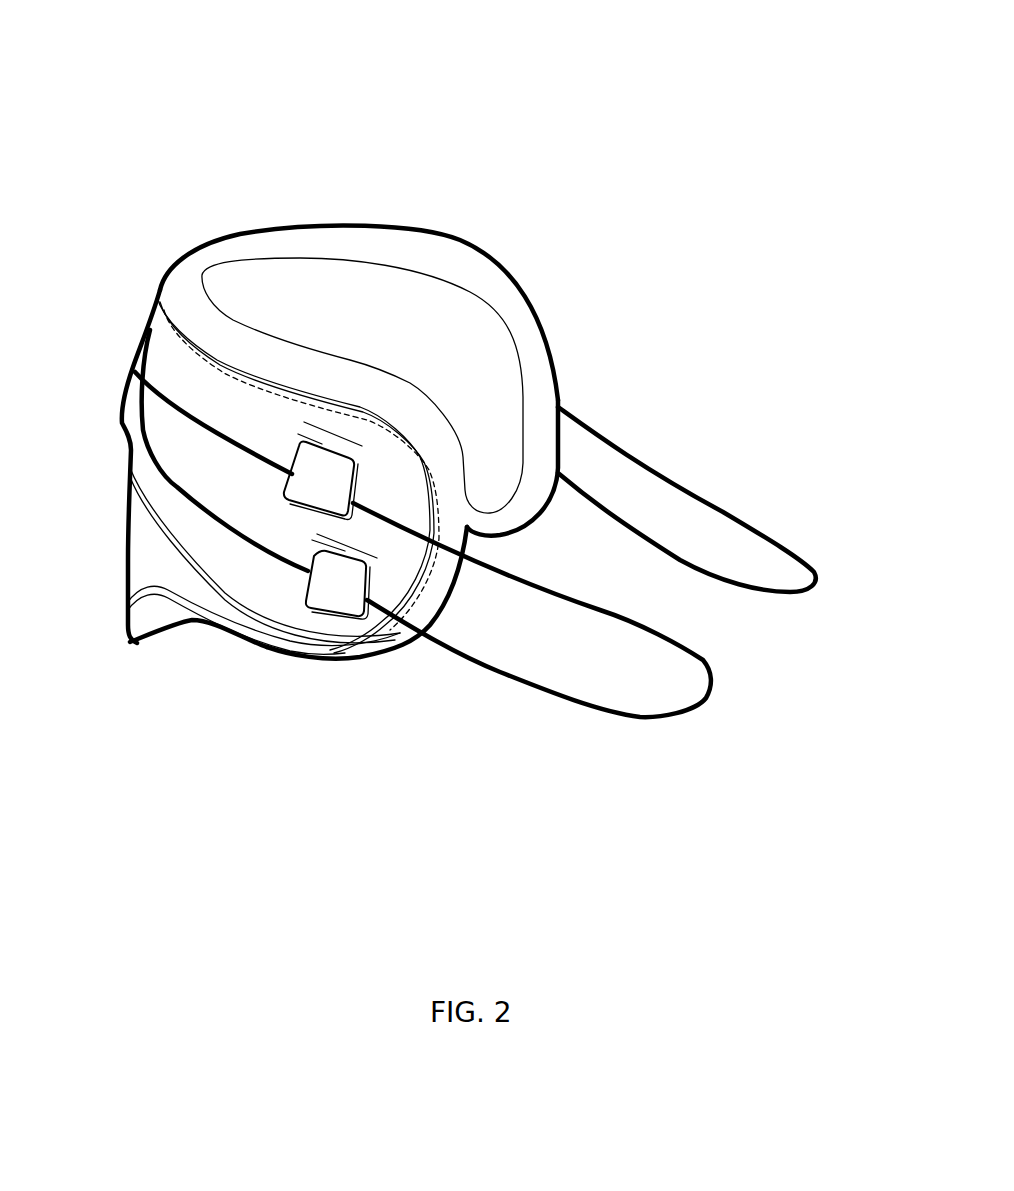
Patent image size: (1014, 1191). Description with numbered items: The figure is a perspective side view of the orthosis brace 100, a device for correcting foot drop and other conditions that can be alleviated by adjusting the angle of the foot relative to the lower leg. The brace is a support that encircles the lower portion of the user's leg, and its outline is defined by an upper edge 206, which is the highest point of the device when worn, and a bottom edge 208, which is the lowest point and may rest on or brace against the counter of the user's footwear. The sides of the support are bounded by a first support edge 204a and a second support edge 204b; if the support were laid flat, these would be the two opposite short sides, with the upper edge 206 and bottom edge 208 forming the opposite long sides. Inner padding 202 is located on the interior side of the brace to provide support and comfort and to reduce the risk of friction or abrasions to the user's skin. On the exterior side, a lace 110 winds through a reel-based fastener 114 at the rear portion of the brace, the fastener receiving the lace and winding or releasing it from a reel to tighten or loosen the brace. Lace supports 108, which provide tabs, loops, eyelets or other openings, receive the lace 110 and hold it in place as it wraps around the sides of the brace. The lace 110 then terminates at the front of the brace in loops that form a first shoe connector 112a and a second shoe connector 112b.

The orthosis brace 100 is at (188, 70).
The lace supports 108 is at (320, 483).
The lace 110 is at (726, 500).
The first shoe connector 112a is at (817, 573).
The second shoe connector 112b is at (712, 693).
The reel-based fastener 114 is at (132, 400).
The inner padding 202 is at (440, 330).
The first support edge 204a is at (540, 360).
The second support edge 204b is at (435, 584).
The upper edge 206 is at (232, 258).
The bottom edge 208 is at (142, 644).